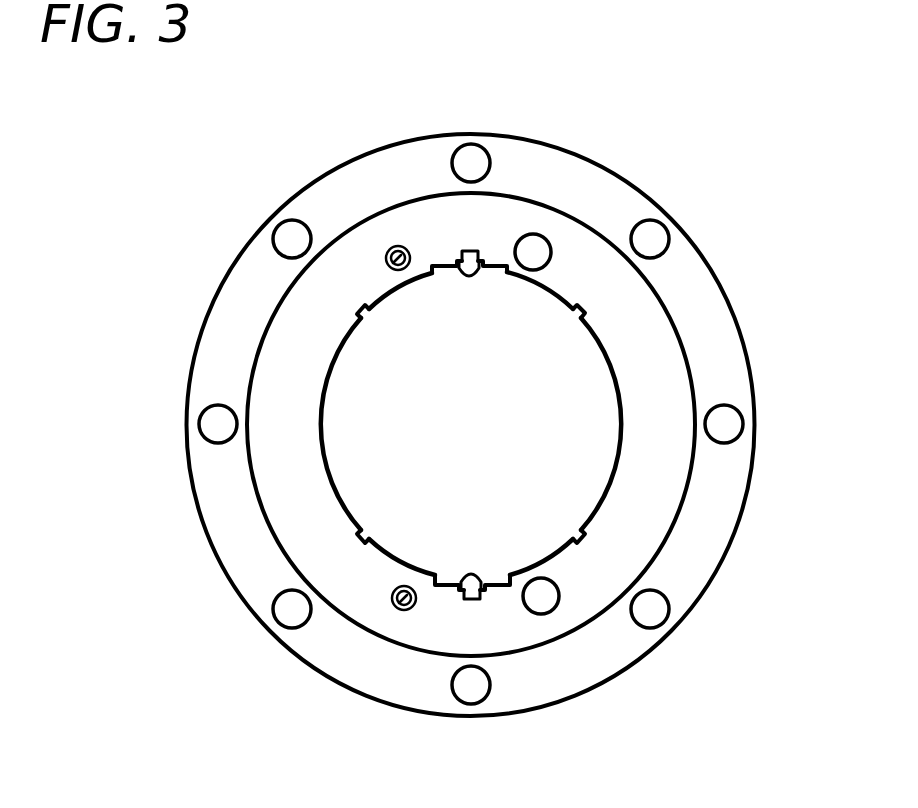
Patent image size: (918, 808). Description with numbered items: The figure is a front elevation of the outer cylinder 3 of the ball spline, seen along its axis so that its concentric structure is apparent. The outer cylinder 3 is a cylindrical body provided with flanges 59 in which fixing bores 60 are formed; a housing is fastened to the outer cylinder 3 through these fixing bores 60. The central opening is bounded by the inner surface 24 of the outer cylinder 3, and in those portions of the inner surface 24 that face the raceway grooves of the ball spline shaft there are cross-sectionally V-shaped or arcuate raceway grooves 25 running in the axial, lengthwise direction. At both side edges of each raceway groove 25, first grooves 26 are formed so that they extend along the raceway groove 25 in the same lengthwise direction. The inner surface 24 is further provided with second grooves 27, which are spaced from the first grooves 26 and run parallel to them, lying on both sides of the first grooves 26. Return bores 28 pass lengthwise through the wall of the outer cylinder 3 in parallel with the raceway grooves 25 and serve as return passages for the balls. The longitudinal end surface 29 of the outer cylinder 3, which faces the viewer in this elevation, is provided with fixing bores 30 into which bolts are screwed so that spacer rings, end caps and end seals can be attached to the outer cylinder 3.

The outer cylinder 3 is at (184, 487).
The inner surface 24 is at (622, 440).
The raceway groove 25 is at (458, 262).
The first groove 26 is at (440, 272).
The second groove 27 is at (366, 318).
The return bore 28 is at (543, 250).
The longitudinal end surface 29 is at (275, 360).
The fixing bore 30 is at (392, 254).
The flange 59 is at (700, 284).
The fixing bore 60 is at (730, 428).